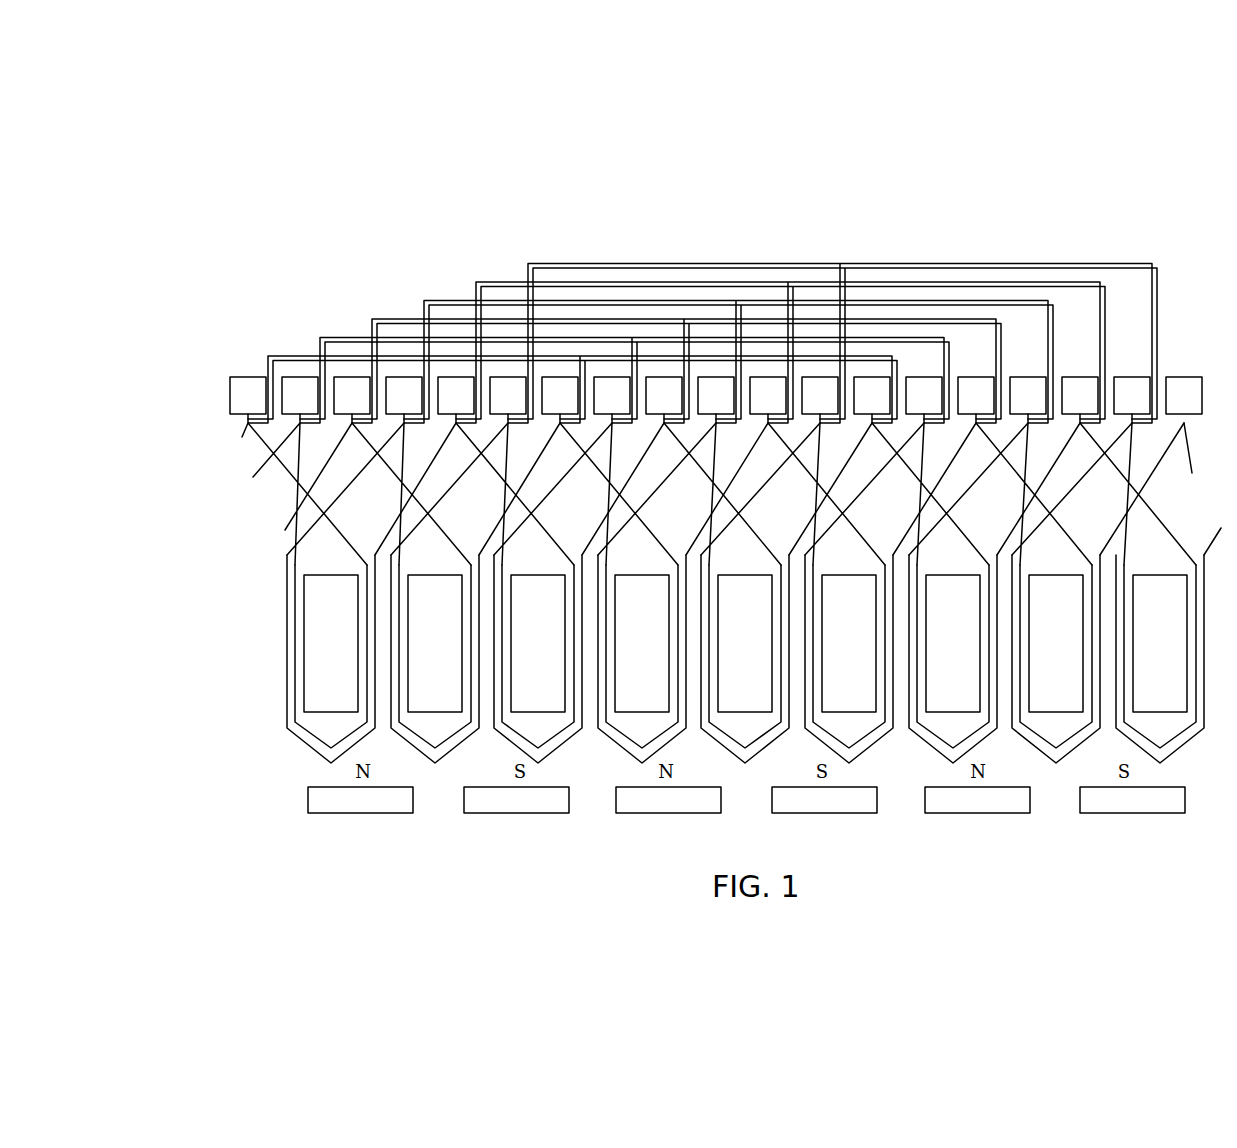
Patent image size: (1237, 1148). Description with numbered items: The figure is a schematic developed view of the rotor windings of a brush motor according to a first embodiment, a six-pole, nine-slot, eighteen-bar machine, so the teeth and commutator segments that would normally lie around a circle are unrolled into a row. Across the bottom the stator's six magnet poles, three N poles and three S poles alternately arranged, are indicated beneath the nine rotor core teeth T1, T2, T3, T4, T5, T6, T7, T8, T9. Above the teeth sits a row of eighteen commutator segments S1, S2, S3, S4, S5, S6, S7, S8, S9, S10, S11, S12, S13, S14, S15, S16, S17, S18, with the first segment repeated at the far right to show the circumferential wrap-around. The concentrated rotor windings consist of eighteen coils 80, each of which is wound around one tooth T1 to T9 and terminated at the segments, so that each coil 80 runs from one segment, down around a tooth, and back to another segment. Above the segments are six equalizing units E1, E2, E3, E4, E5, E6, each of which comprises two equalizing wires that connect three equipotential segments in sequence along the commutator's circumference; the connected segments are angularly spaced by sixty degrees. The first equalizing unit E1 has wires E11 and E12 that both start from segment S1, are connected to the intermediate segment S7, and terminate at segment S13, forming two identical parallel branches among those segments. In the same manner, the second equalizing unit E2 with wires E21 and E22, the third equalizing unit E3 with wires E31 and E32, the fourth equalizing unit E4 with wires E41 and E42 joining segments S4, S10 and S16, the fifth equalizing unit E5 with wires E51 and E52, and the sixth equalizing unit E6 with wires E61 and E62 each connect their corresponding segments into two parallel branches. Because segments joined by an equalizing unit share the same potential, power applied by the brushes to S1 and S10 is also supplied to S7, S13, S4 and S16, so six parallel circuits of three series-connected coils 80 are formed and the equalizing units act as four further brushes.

The coil 80 is at (287, 633).
The first equalizing unit E1 is at (240, 272).
The equalizing wire E11 is at (280, 355).
The equalizing wire E12 is at (313, 355).
The second equalizing unit E2 is at (400, 213).
The equalizing wire E21 is at (443, 337).
The equalizing wire E22 is at (463, 337).
The third equalizing unit E3 is at (532, 190).
The equalizing wire E31 is at (562, 319).
The equalizing wire E32 is at (603, 319).
The fourth equalizing unit E4 is at (668, 162).
The equalizing wire E41 is at (697, 300).
The equalizing wire E42 is at (722, 300).
The fifth equalizing unit E5 is at (783, 153).
The equalizing wire E51 is at (797, 282).
The equalizing wire E52 is at (829, 282).
The sixth equalizing unit E6 is at (913, 148).
The equalizing wire E61 is at (923, 263).
The equalizing wire E62 is at (972, 263).
The segment S1 is at (716, 395).
The segment S2 is at (300, 395).
The segment S3 is at (352, 395).
The segment S4 is at (404, 395).
The segment S5 is at (456, 395).
The segment S6 is at (508, 395).
The segment S7 is at (560, 395).
The segment S8 is at (612, 395).
The segment S9 is at (664, 395).
The segment S10 is at (716, 395).
The segment S11 is at (768, 395).
The segment S12 is at (820, 395).
The segment S13 is at (872, 395).
The segment S14 is at (924, 395).
The segment S15 is at (976, 395).
The segment S16 is at (1028, 395).
The segment S17 is at (1080, 395).
The segment S18 is at (1132, 395).
The tooth T1 is at (349, 593).
The tooth T2 is at (456, 593).
The tooth T3 is at (560, 593).
The tooth T4 is at (664, 593).
The tooth T5 is at (768, 593).
The tooth T6 is at (872, 593).
The tooth T7 is at (976, 593).
The tooth T8 is at (1080, 593).
The tooth T9 is at (1150, 593).